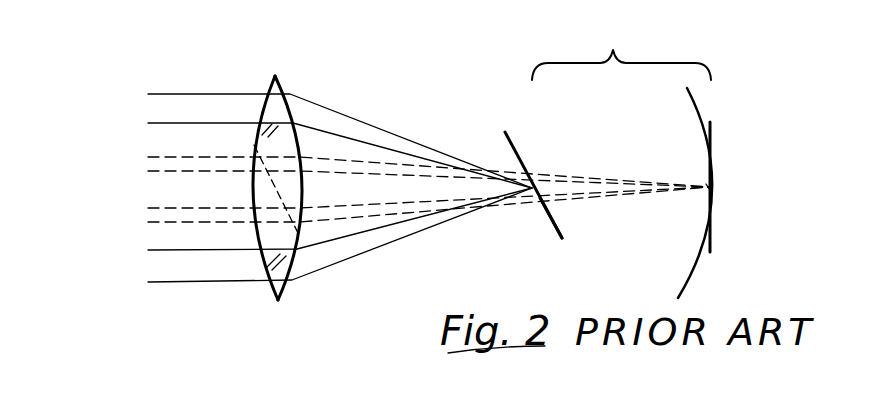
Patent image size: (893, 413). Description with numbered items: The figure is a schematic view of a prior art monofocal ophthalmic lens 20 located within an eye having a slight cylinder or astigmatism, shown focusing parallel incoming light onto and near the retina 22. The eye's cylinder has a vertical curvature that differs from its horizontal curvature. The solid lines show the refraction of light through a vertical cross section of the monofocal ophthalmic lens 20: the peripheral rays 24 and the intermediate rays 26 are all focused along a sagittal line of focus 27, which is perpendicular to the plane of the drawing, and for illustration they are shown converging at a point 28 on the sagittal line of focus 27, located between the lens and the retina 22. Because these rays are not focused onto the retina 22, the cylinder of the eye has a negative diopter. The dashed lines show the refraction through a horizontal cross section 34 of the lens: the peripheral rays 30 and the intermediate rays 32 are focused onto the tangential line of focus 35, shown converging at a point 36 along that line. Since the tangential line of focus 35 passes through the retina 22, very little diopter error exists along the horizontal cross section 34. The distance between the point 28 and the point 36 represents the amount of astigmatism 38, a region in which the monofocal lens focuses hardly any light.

The monofocal ophthalmic lens 20 is at (285, 87).
The retina 22 is at (696, 281).
The peripheral rays 24 is at (196, 94).
The intermediate rays 26 is at (215, 123).
The sagittal line of focus 27 is at (550, 224).
The point 28 is at (537, 181).
The peripheral rays 30 is at (160, 156).
The intermediate rays 32 is at (173, 207).
The horizontal cross section 34 is at (280, 193).
The tangential line of focus 35 is at (712, 132).
The point 36 is at (707, 194).
The amount of astigmatism 38 is at (621, 45).